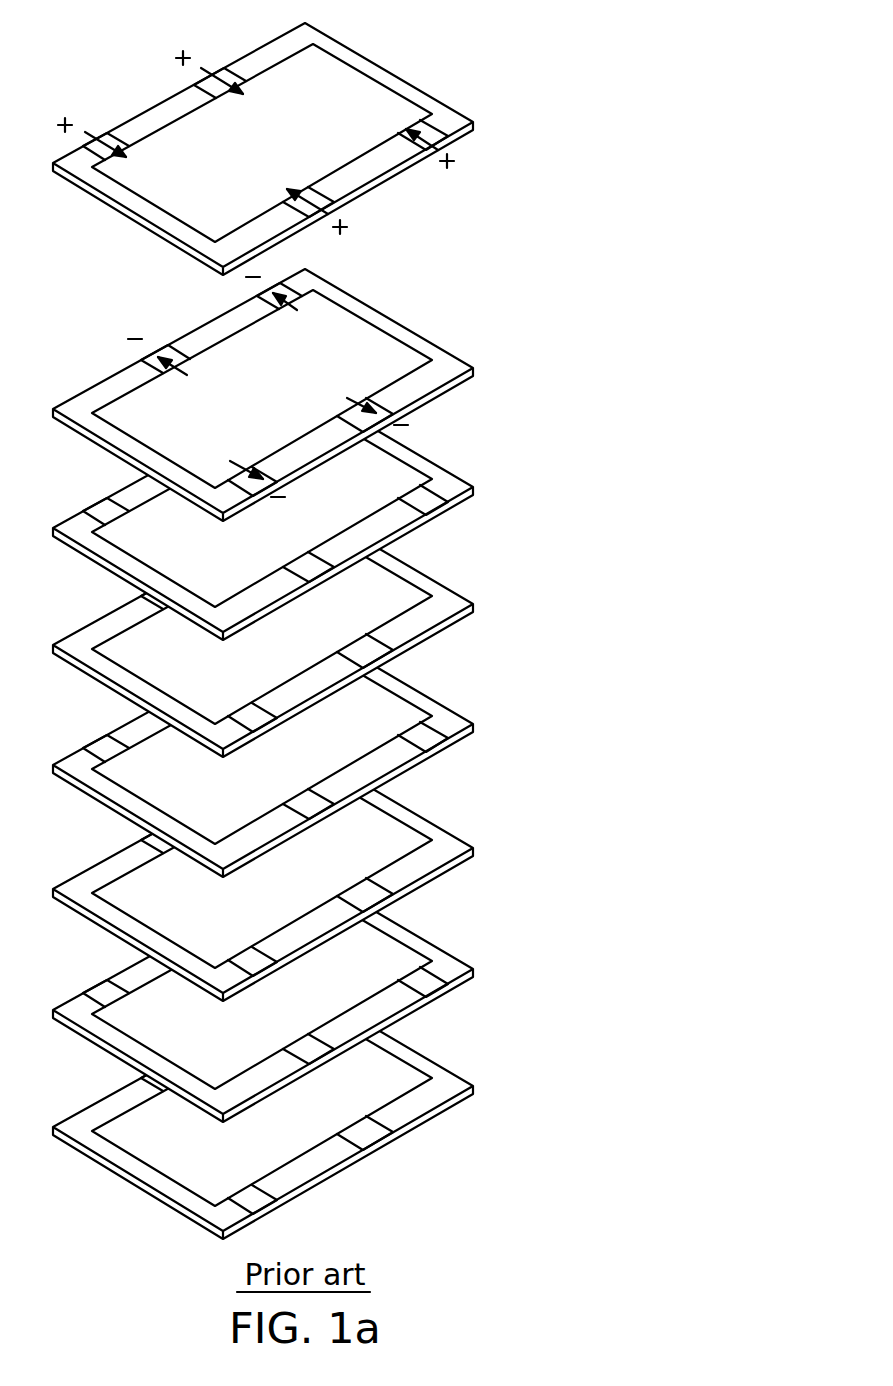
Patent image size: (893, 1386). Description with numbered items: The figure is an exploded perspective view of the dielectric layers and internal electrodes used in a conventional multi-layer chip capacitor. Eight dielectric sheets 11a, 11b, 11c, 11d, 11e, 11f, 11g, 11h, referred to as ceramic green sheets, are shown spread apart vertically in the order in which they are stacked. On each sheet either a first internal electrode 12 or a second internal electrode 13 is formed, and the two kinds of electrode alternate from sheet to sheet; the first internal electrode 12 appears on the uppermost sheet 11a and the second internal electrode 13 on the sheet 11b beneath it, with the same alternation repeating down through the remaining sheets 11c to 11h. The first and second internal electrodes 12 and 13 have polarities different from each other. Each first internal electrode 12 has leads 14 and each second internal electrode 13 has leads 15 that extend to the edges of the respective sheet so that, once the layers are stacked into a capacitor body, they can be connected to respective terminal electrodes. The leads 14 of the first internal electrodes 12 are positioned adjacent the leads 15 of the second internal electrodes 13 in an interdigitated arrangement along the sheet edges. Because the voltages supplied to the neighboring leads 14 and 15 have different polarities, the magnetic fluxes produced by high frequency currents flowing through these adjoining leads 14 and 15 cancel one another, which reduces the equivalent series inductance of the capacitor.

The dielectric sheet 11a is at (473, 128).
The dielectric sheet 11b is at (474, 371).
The dielectric sheet 11c is at (474, 489).
The dielectric sheet 11d is at (474, 606).
The dielectric sheet 11e is at (474, 726).
The dielectric sheet 11f is at (474, 850).
The dielectric sheet 11g is at (474, 971).
The dielectric sheet 11h is at (474, 1088).
The first internal electrode 12 is at (147, 183).
The second internal electrode 13 is at (125, 411).
The lead 14 is at (110, 147).
The lead 15 is at (160, 350).